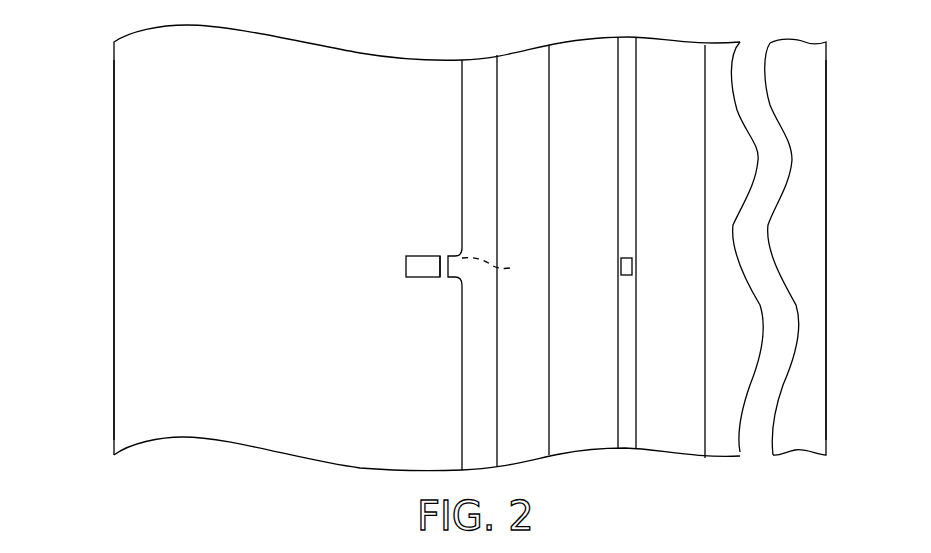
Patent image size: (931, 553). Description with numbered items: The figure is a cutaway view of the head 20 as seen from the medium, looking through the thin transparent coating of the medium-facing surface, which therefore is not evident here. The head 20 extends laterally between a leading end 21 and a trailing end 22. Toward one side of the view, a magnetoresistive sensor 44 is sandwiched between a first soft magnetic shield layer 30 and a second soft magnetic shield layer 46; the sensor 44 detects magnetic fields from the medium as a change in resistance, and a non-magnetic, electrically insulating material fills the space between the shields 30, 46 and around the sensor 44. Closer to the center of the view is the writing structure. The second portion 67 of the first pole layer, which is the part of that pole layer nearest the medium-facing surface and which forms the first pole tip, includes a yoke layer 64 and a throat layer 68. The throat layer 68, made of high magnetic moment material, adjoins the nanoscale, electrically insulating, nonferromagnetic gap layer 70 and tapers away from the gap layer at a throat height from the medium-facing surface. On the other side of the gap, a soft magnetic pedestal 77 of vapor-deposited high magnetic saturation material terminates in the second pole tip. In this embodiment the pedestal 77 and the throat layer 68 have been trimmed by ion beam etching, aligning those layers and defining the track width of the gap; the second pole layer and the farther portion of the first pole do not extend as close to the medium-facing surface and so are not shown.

The head 20 is at (148, 472).
The leading end 21 is at (826, 352).
The trailing end 22 is at (113, 249).
The first soft magnetic shield layer 30 is at (705, 232).
The magnetoresistive sensor 44 is at (621, 268).
The second soft magnetic shield layer 46 is at (618, 113).
The yoke layer 64 is at (497, 163).
The second portion of the first pole layer 67 is at (461, 250).
The throat layer 68 is at (503, 267).
The gap layer 70 is at (445, 287).
The pedestal 77 is at (406, 263).